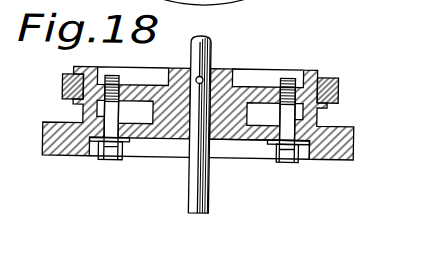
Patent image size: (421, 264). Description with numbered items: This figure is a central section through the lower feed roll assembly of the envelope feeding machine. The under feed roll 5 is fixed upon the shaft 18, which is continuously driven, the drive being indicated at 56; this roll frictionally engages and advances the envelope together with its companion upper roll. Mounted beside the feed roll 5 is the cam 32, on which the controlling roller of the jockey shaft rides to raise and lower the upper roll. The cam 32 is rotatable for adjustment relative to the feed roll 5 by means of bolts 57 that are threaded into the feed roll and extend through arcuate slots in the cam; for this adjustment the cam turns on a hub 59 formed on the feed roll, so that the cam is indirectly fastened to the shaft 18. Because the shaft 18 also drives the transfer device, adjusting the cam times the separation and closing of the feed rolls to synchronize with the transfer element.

The shaft 18 is at (209, 41).
The drive indication 56 is at (204, 78).
The feed roll 5 is at (338, 84).
The cam 32 is at (355, 140).
The bolts 57 is at (118, 163).
The hub 59 is at (222, 141).